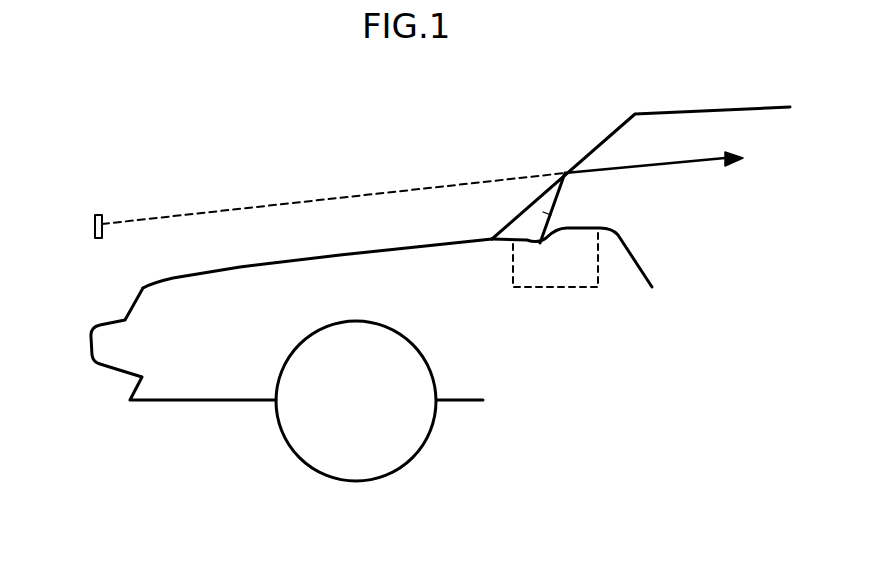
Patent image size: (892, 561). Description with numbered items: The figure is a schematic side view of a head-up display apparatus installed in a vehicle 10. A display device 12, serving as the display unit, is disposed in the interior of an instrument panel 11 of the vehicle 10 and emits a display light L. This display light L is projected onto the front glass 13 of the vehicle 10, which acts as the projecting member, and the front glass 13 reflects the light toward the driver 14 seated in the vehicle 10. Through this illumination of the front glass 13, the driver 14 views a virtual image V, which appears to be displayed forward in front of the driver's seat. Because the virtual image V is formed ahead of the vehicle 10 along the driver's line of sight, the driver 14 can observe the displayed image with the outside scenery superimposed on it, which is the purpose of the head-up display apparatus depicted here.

The vehicle 10 is at (203, 399).
The instrument panel 11 is at (620, 230).
The display device 12 is at (563, 288).
The front glass 13 is at (590, 150).
The driver 14 is at (733, 155).
The virtual image V is at (93, 218).
The display light L is at (543, 212).